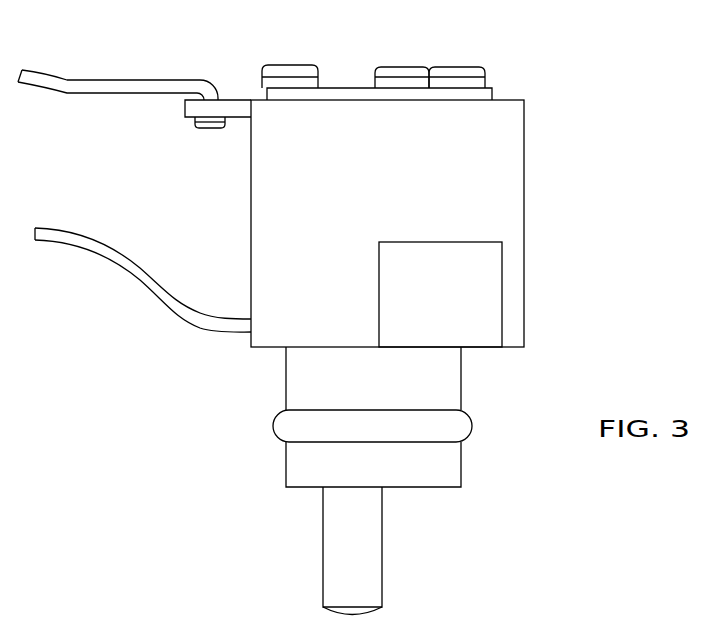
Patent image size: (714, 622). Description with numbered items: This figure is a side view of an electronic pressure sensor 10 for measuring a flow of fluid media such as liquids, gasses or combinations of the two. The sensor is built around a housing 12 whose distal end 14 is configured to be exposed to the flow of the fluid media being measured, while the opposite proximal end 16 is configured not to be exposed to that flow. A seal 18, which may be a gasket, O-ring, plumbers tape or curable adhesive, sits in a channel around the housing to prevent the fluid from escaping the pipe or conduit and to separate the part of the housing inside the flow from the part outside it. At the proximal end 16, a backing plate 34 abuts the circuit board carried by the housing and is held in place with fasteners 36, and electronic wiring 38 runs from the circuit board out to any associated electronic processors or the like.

The electronic pressure sensor 10 is at (636, 79).
The housing 12 is at (424, 223).
The distal end 14 is at (413, 481).
The proximal end 16 is at (420, 76).
The seal 18 is at (405, 414).
The backing plate 34 is at (413, 51).
The fasteners 36 is at (275, 51).
The electronic wiring 38 is at (134, 71).